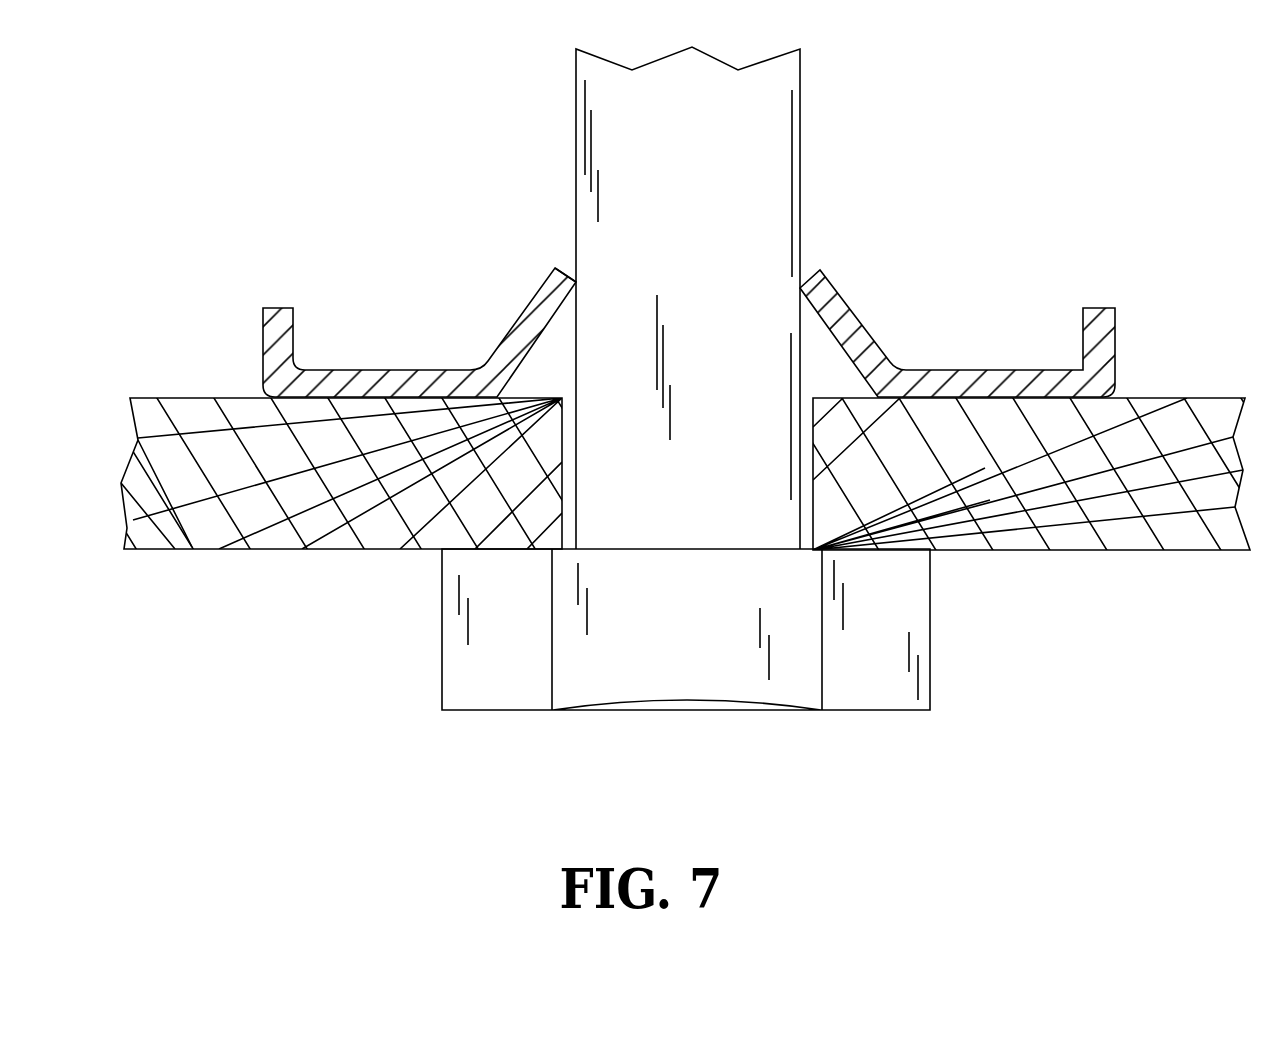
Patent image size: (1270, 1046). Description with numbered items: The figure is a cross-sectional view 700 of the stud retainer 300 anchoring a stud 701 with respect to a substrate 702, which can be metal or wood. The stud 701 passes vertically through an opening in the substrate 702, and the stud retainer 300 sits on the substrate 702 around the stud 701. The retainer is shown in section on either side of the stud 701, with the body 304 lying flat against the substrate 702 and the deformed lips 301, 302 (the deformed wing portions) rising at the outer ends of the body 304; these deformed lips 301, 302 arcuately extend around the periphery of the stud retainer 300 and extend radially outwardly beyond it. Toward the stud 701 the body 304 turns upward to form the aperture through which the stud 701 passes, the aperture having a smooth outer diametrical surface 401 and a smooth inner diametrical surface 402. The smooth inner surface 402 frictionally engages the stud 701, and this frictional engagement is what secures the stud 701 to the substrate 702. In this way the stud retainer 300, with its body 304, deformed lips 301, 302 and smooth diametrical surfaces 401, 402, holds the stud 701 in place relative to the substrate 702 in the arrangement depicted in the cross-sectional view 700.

The cross-sectional view 700 is at (1062, 209).
The stud 701 is at (647, 485).
The substrate 702 is at (984, 505).
The stud retainer 300 is at (1023, 303).
The deformed lip 301 is at (283, 322).
The deformed lip 302 is at (1097, 335).
The body 304 is at (1023, 308).
The outer diametrical surface 401 is at (459, 261).
The inner diametrical surface 402 is at (576, 288).